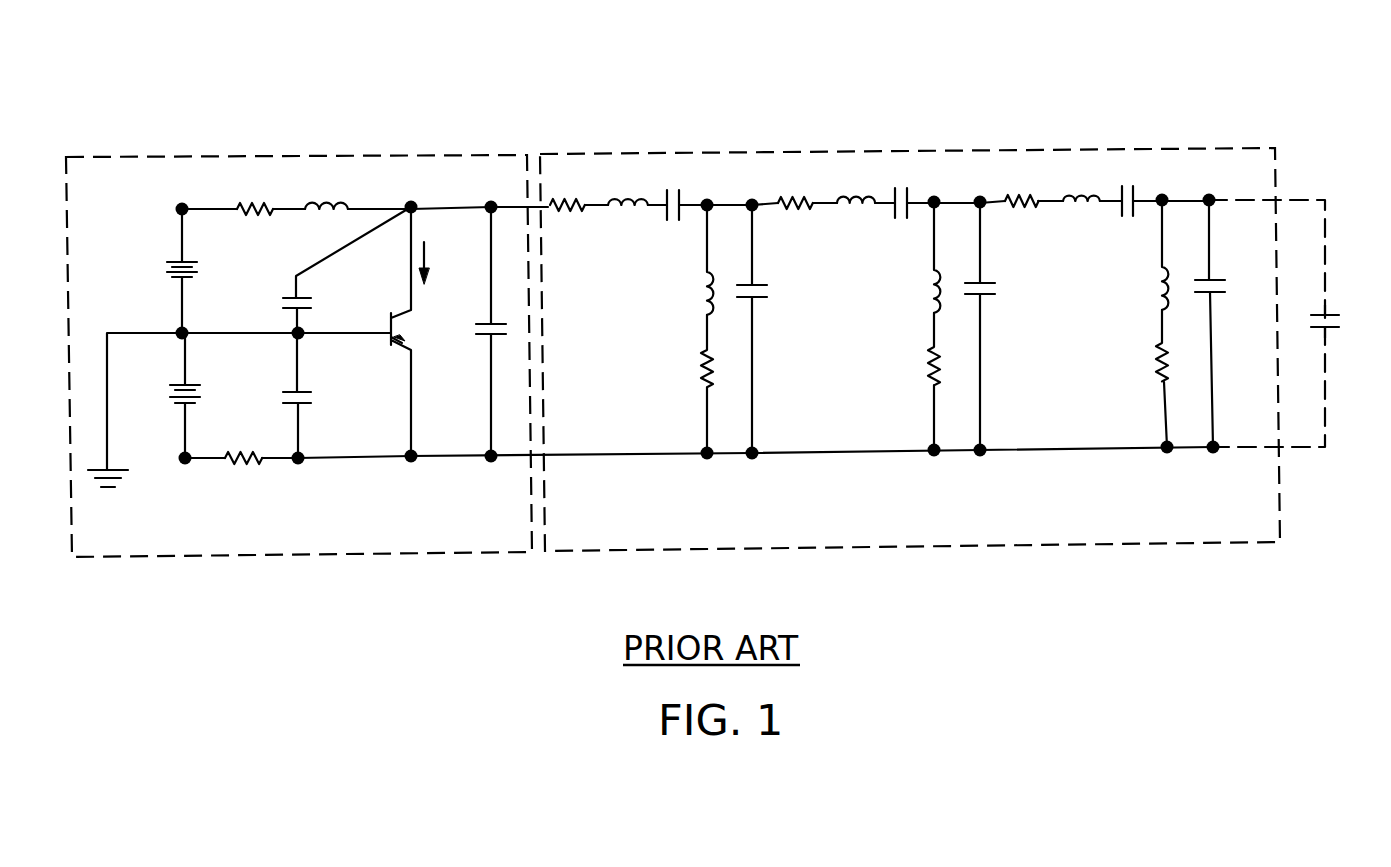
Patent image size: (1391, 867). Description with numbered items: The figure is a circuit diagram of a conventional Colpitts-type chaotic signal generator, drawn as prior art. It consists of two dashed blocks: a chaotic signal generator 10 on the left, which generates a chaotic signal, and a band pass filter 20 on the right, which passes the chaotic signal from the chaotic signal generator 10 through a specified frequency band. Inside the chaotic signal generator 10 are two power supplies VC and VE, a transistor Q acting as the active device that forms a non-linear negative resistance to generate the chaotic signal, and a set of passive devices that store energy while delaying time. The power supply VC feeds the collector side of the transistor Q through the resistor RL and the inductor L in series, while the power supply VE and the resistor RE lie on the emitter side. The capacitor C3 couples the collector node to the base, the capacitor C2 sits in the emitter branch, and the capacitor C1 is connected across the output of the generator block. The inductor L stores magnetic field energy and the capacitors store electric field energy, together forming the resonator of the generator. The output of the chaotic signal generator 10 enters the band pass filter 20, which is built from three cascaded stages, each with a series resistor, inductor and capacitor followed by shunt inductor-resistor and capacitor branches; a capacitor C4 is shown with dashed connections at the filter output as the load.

The chaotic signal generator 10 is at (272, 156).
The band pass filter 20 is at (982, 151).
The power supply VC is at (160, 271).
The power supply VE is at (165, 395).
The resistor RL is at (254, 192).
The resistor RE is at (243, 445).
The inductor L is at (326, 190).
The capacitor C1 is at (481, 331).
The capacitor C2 is at (275, 395).
The capacitor C3 is at (324, 270).
The capacitor C4 is at (1296, 323).
The transistor Q is at (398, 331).